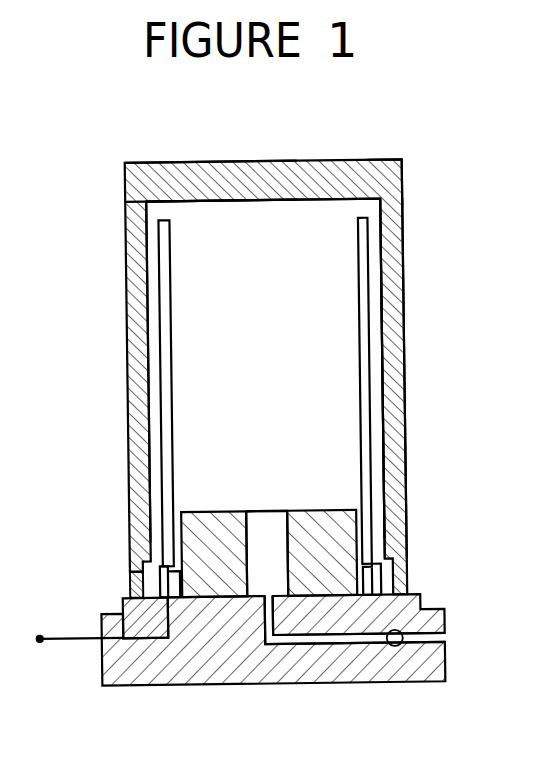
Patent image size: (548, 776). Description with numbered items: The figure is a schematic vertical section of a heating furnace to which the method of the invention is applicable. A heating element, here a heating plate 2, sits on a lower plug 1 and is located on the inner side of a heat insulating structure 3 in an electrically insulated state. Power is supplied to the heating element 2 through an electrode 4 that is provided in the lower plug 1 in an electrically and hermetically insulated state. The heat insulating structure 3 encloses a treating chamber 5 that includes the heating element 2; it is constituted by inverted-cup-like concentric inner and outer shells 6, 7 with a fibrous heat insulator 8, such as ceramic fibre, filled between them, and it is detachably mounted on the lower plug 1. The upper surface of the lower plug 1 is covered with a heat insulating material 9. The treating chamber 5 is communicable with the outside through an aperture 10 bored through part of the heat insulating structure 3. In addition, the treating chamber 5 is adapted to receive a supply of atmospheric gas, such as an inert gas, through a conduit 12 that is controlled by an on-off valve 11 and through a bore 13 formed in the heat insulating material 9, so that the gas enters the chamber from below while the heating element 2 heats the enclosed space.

The lower plug 1 is at (192, 687).
The heating plate 2 is at (364, 375).
The heat insulating structure 3 is at (322, 161).
The electrode 4 is at (160, 627).
The treating chamber 5 is at (246, 230).
The inner shell 6 is at (384, 250).
The outer shell 7 is at (404, 186).
The fibrous heat insulator 8 is at (178, 178).
The heat insulating material 9 is at (338, 566).
The aperture 10 is at (133, 578).
The on-off valve 11 is at (401, 648).
The conduit 12 is at (325, 645).
The bore 13 is at (265, 535).